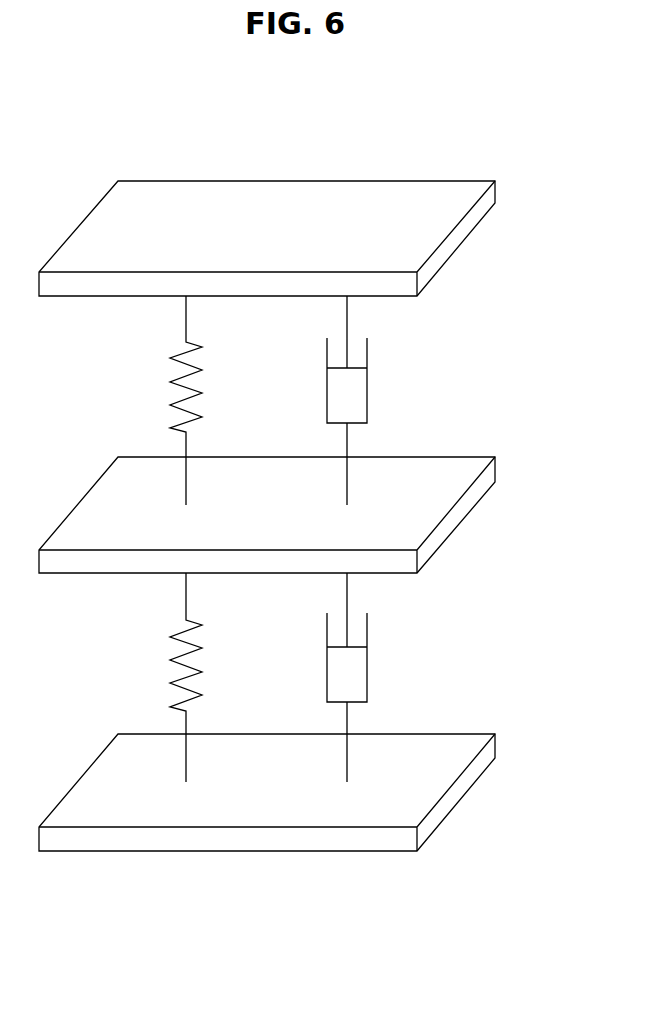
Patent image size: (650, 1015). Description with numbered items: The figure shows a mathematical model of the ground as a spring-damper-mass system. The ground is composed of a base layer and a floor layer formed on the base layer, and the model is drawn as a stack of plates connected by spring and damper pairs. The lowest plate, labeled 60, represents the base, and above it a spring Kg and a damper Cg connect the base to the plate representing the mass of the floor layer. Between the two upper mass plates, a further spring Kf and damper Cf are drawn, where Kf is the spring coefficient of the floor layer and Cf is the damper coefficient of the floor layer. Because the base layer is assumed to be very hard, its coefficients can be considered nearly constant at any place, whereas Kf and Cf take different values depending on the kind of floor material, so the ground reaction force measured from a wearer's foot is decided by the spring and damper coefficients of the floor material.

The base plate 60 is at (462, 790).
The spring coefficient of the floor layer Kf is at (204, 400).
The damper coefficient of the floor layer Cf is at (364, 400).
The spring stiffness Kg is at (203, 677).
The damper Cg is at (363, 677).